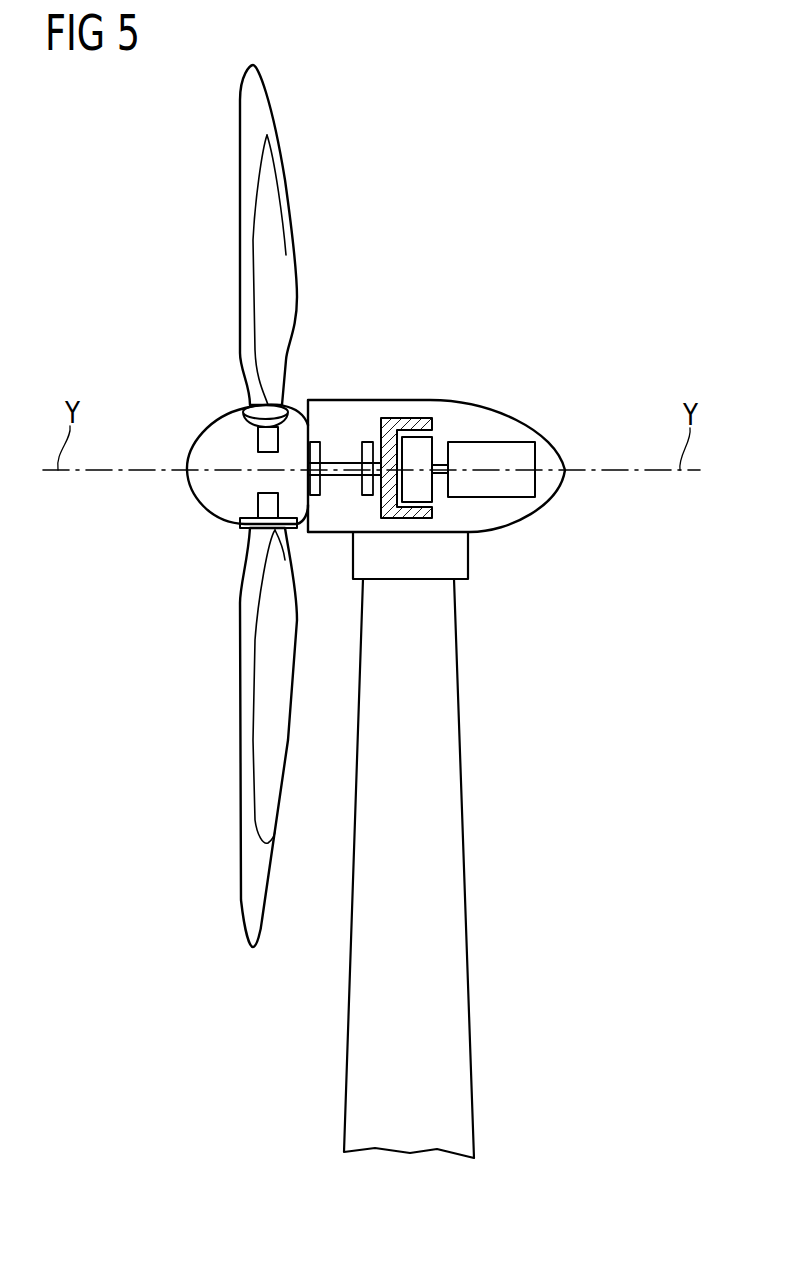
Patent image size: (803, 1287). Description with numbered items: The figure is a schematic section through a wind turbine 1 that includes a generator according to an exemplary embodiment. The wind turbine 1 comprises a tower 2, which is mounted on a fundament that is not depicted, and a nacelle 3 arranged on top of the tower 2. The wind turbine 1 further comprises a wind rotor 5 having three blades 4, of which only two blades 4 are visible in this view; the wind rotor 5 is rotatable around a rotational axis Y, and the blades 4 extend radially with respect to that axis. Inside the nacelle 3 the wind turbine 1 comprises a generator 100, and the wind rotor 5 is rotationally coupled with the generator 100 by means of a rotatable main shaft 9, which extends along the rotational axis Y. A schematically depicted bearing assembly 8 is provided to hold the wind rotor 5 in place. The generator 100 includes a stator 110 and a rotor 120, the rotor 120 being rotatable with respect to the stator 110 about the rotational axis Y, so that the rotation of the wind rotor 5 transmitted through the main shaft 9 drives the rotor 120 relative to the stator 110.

The wind turbine 1 is at (620, 262).
The tower 2 is at (455, 852).
The nacelle 3 is at (555, 400).
The blades 4 is at (240, 228).
The wind rotor 5 is at (178, 510).
The bearing assembly 8 is at (366, 442).
The rotatable main shaft 9 is at (330, 478).
The generator 100 is at (435, 400).
The stator 110 is at (425, 445).
The rotor 120 is at (390, 420).